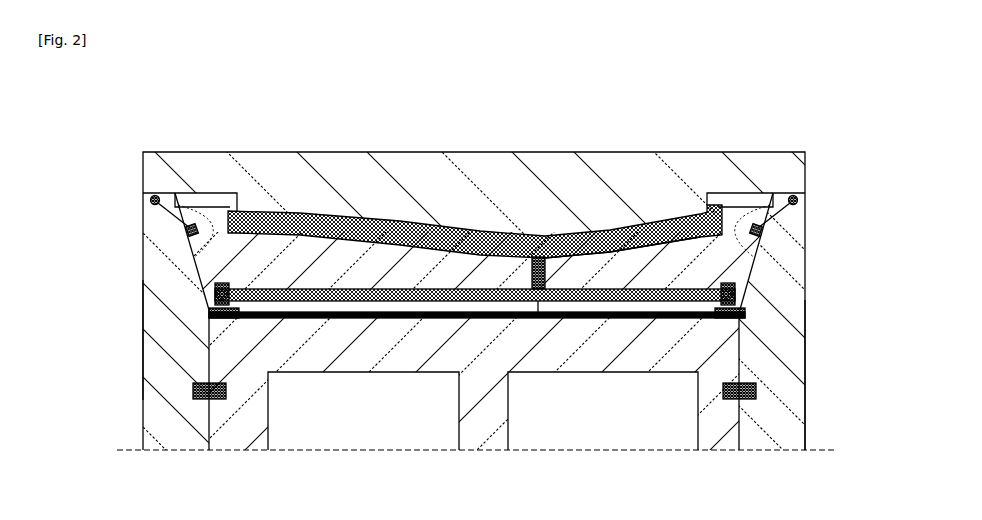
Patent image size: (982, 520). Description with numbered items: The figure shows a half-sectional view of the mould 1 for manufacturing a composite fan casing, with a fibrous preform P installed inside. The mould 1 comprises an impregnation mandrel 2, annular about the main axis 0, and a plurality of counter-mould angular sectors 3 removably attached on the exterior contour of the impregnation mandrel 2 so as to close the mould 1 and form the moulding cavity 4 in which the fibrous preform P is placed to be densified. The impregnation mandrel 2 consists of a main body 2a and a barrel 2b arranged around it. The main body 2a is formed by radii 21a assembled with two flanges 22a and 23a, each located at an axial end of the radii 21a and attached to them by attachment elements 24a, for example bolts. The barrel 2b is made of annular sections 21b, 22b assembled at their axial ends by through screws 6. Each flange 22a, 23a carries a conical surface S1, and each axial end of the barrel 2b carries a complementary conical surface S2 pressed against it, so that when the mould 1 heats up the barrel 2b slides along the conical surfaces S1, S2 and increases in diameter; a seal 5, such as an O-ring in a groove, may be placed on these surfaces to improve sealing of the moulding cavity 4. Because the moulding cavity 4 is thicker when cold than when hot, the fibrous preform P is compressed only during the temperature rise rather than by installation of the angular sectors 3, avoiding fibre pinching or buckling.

The mould 1 is at (137, 130).
The impregnation mandrel 2 is at (450, 301).
The main body 2a is at (830, 375).
The barrel 2b is at (480, 206).
The counter-mould angular sectors 3 is at (486, 192).
The moulding cavity 4 is at (475, 191).
The seal 5 is at (474, 180).
The through screws 6 is at (477, 221).
The fibrous preform P is at (541, 207).
The conical surface S1 is at (205, 243).
The conical surface S2 is at (474, 191).
The radii 21a is at (467, 427).
The annular section 21b is at (474, 219).
The flange 22a is at (154, 365).
The annular section 22b is at (622, 191).
The flange 23a is at (793, 381).
The attachment elements 24a is at (200, 400).
The main axis 0 is at (120, 451).